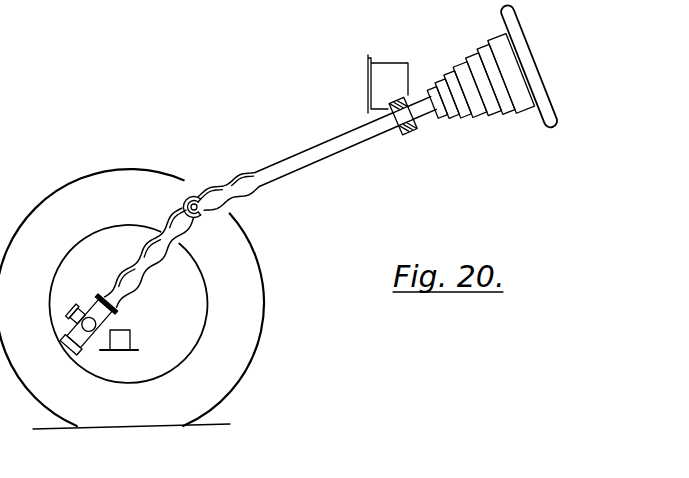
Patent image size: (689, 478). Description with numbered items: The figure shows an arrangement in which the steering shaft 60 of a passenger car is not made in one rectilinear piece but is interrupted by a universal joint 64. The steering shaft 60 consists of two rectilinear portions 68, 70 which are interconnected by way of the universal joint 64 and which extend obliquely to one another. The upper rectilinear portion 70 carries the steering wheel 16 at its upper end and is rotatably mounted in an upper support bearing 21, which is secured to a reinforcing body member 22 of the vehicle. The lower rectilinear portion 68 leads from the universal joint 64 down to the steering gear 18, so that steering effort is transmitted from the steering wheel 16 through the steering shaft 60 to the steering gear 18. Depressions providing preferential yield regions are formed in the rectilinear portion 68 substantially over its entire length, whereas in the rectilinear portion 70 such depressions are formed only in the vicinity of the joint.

The steering wheel 16 is at (537, 88).
The steering gear 18 is at (77, 301).
The upper support bearing 21 is at (412, 131).
The reinforcing body member 22 is at (366, 89).
The steering shaft 60 is at (249, 196).
The universal joint 64 is at (203, 216).
The rectilinear portion 68 is at (150, 274).
The rectilinear portion 70 is at (328, 156).